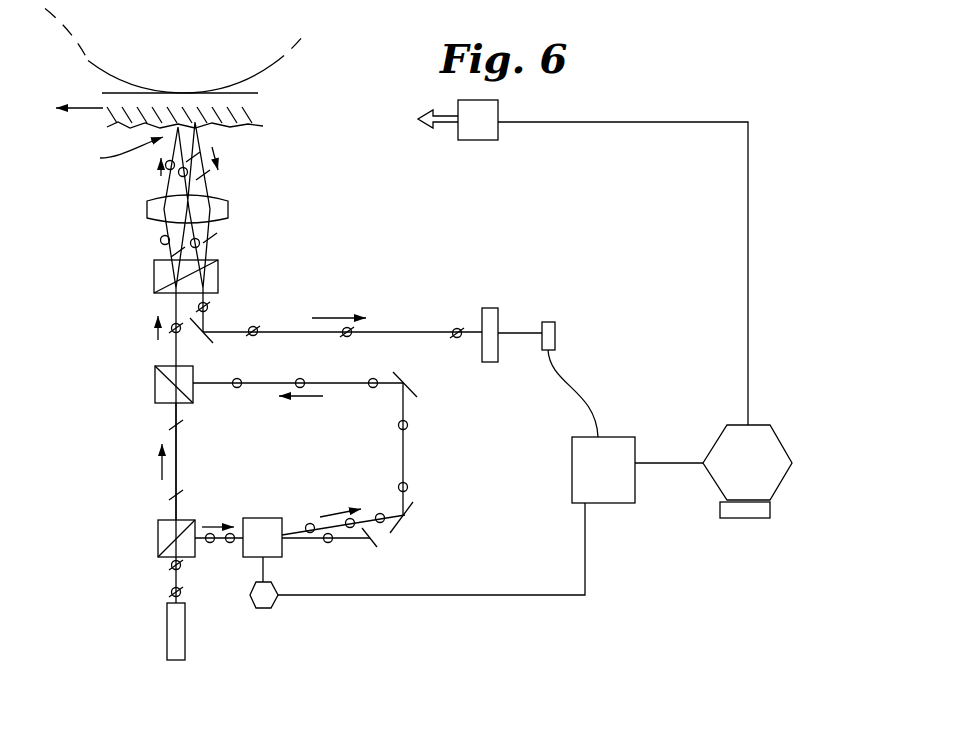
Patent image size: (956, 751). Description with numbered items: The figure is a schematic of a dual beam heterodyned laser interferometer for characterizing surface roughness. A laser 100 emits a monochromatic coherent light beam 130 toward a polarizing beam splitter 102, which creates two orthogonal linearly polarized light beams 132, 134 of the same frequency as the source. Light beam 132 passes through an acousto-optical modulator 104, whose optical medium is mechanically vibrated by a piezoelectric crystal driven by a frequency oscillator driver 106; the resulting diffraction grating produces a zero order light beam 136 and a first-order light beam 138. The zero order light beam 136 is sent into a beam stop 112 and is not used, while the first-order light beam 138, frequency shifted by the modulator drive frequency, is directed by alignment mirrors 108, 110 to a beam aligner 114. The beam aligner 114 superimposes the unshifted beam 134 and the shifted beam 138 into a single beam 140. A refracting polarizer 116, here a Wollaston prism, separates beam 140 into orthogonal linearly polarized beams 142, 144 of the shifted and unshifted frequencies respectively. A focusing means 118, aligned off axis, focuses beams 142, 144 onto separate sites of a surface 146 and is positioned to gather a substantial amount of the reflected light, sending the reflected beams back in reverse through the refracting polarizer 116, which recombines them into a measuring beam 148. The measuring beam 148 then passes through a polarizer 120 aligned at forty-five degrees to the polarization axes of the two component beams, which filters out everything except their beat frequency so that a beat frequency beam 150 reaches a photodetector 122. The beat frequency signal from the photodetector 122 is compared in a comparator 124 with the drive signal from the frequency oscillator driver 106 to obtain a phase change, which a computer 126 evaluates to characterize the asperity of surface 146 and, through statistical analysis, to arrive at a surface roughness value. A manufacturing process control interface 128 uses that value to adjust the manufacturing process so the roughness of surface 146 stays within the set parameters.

The laser 100 is at (167, 637).
The polarizing beam splitter 102 is at (172, 562).
The acousto-optical modulator 104 is at (253, 558).
The frequency oscillator driver 106 is at (278, 608).
The alignment mirror 108 is at (412, 515).
The alignment mirror 110 is at (417, 387).
The beam stop 112 is at (368, 543).
The beam aligner 114 is at (153, 385).
The refracting polarizer 116 is at (153, 272).
The focusing means 118 is at (147, 208).
The polarizer 120 is at (493, 308).
The photodetector 122 is at (552, 322).
The comparator 124 is at (572, 480).
The computer 126 is at (777, 433).
The manufacturing process control interface 128 is at (475, 140).
The monochromatic coherent light beam 130 is at (173, 577).
The linearly polarized light beam 132 is at (220, 544).
The linearly polarized light beam 134 is at (177, 467).
The zero order light beam 136 is at (360, 542).
The first-order light beam 138 is at (370, 513).
The superimposed beam 140 is at (172, 350).
The orthogonal linearly polarized beam 142 is at (162, 240).
The orthogonal linearly polarized beam 144 is at (215, 183).
The surface 146 is at (114, 154).
The measuring beam 148 is at (287, 332).
The beat frequency beam 150 is at (520, 335).